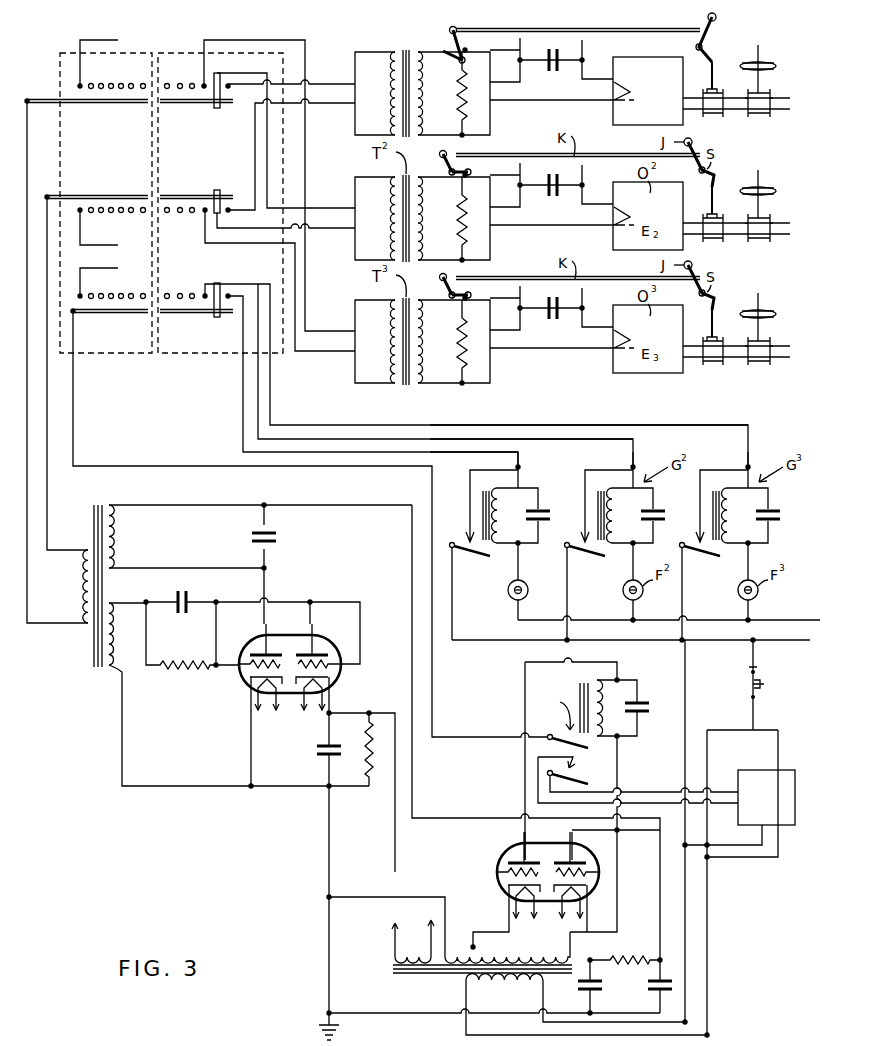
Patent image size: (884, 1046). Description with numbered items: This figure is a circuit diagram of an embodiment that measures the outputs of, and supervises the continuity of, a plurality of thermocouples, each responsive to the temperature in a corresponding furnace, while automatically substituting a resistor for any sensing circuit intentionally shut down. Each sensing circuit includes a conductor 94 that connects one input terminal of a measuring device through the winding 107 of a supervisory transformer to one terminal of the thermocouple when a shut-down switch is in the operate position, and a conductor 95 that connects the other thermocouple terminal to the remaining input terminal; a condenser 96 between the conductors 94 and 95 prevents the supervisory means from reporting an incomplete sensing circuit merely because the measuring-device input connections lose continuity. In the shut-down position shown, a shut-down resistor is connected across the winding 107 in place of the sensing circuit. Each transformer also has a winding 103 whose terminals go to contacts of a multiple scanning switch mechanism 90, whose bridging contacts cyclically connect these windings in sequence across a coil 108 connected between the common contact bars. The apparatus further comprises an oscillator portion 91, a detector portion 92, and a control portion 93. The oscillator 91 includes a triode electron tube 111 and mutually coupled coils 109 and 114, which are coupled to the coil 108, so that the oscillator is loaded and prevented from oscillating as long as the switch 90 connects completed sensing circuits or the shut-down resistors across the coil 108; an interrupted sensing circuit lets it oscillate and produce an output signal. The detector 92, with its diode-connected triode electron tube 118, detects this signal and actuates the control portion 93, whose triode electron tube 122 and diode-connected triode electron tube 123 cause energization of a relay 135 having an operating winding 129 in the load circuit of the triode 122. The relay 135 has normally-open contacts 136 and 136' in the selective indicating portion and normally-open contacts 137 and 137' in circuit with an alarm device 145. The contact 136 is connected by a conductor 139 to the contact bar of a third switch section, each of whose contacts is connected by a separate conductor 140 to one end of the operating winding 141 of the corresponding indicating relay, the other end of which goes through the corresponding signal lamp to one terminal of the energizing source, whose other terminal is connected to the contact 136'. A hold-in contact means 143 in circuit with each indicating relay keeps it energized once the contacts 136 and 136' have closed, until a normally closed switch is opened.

The multiple scanning switch mechanism 90 is at (51, 61).
The oscillator portion 91 is at (182, 829).
The detector portion 92 is at (291, 829).
The control portion 93 is at (505, 794).
The conductor 94 is at (505, 60).
The conductor 95 is at (596, 59).
The condenser 96 is at (554, 72).
The transformer winding 103 is at (390, 93).
The transformer winding 107 is at (428, 97).
The coil 108 is at (80, 587).
The coil 109 is at (115, 546).
The triode electron tube 111 is at (254, 648).
The coil 114 is at (115, 668).
The diode-connected triode electron tube 118 is at (318, 648).
The triode electron tube 122 is at (509, 849).
The diode-connected triode electron tube 123 is at (578, 844).
The operating winding 129 is at (610, 710).
The relay 135 is at (583, 668).
The relay contact 136 is at (557, 732).
The relay contact 136' is at (550, 714).
The relay contact 137 is at (643, 778).
The relay contact 137' is at (638, 775).
The conductor 139 is at (169, 466).
The conductor 140 is at (468, 424).
The operating winding 141 is at (499, 513).
The hold-in contact means 143 is at (470, 592).
The alarm device 145 is at (764, 767).